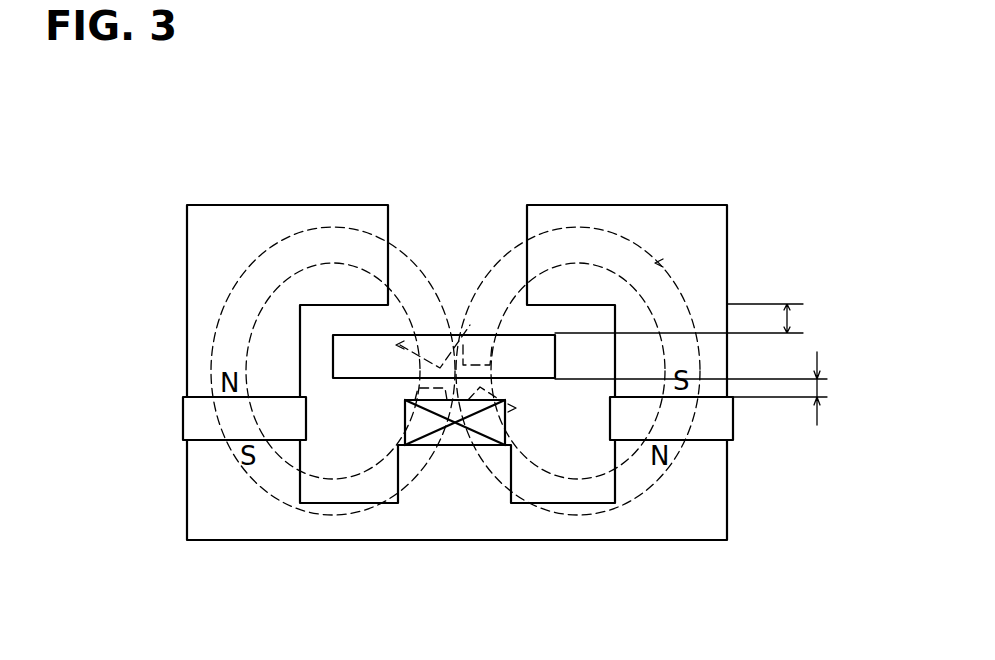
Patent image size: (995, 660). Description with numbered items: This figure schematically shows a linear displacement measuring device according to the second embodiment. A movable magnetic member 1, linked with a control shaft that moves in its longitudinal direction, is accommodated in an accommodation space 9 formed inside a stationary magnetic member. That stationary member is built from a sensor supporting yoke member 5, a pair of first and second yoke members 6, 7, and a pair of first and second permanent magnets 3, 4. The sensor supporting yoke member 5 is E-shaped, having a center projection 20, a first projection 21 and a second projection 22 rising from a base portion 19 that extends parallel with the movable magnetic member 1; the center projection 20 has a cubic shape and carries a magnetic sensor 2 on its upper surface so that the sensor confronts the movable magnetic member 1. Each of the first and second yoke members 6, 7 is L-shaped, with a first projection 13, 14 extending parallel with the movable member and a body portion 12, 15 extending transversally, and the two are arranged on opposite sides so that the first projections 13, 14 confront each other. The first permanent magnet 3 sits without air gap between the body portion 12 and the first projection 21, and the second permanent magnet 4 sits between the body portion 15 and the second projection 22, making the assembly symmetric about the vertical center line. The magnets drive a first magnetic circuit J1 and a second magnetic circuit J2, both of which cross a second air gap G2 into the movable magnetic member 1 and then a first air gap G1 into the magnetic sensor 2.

The movable magnetic member 1 is at (365, 350).
The magnetic sensor 2 is at (455, 418).
The first permanent magnet 3 is at (188, 415).
The second permanent magnet 4 is at (725, 424).
The sensor supporting yoke member 5 is at (449, 539).
The first yoke member 6 is at (187, 203).
The second yoke member 7 is at (727, 205).
The accommodation space 9 is at (352, 444).
The body portion 12 is at (197, 360).
The first projection 13 is at (375, 217).
The first projection 14 is at (540, 215).
The body portion 15 is at (718, 358).
The base portion 19 is at (555, 530).
The center projection 20 is at (468, 470).
The first projection 21 is at (205, 478).
The second projection 22 is at (713, 473).
The first magnetic circuit J1 is at (250, 266).
The second magnetic circuit J2 is at (660, 263).
The first air gap G1 is at (712, 388).
The second air gap G2 is at (700, 321).